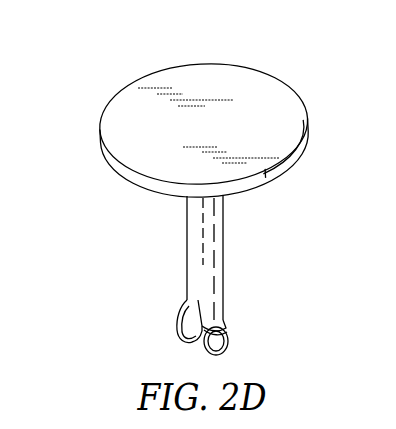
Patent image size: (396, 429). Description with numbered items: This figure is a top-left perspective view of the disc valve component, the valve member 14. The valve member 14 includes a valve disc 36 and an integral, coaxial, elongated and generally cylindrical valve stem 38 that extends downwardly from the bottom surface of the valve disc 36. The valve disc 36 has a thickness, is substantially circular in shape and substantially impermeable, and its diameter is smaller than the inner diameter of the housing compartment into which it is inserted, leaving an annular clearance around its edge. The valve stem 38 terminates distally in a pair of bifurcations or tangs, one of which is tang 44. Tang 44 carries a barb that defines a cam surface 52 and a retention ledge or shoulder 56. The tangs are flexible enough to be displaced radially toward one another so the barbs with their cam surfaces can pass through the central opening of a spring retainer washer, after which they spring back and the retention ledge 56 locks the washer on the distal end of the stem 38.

The valve member 14 is at (272, 57).
The valve disc 36 is at (131, 119).
The valve stem 38 is at (187, 259).
The tang 44 is at (224, 300).
The retention ledge or shoulder 56 is at (231, 325).
The cam surface 52 is at (226, 350).